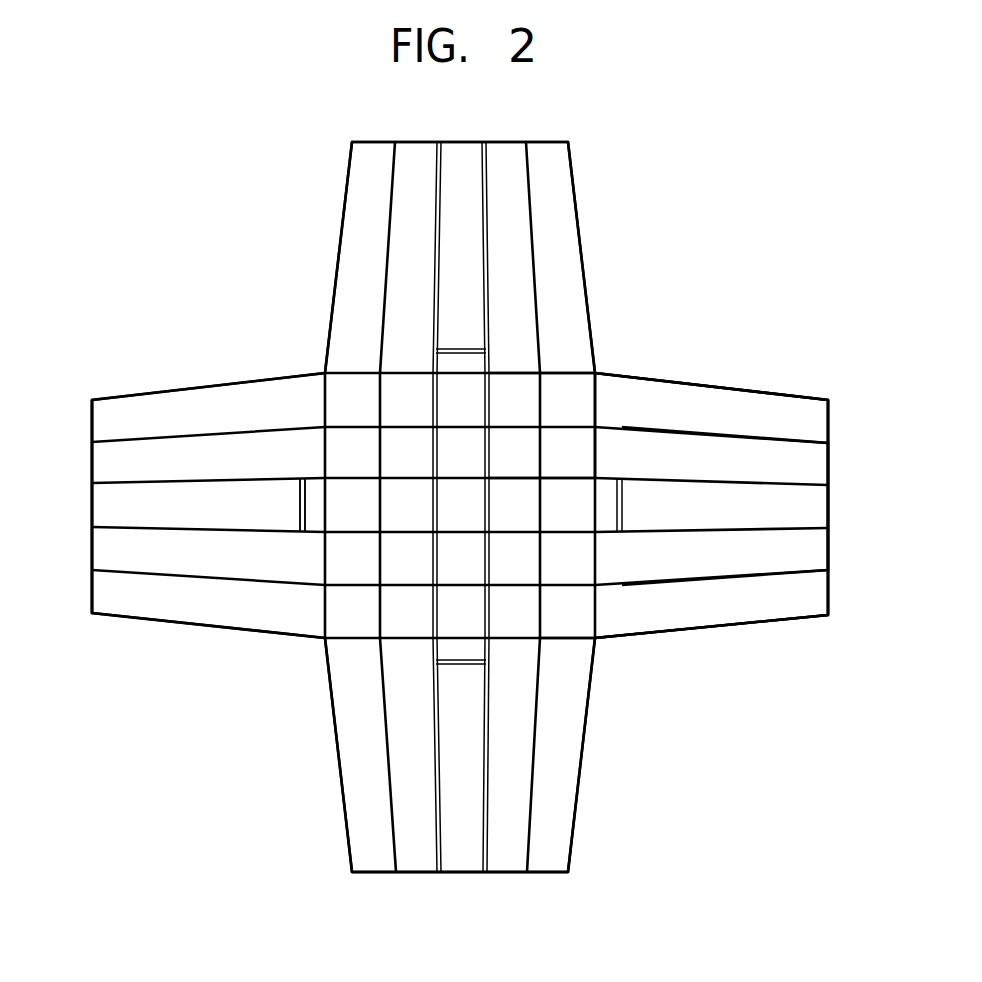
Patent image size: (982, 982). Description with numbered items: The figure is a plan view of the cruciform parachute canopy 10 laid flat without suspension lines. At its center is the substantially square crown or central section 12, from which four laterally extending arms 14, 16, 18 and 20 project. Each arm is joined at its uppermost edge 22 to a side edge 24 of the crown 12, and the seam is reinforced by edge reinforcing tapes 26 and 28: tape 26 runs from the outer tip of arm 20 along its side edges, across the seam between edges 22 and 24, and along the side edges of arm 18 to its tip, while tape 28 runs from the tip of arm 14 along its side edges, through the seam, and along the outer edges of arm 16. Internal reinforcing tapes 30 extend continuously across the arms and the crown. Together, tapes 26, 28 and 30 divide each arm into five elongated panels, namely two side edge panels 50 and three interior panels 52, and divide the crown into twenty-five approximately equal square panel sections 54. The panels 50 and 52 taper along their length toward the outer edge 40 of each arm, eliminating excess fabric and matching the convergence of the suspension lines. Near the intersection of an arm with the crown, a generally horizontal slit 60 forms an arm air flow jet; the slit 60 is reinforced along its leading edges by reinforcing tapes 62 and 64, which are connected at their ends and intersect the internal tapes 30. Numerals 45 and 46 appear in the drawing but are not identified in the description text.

The canopy 10 is at (60, 494).
The crown or central section 12 is at (392, 453).
The arm 14 is at (815, 507).
The arm 16 is at (107, 556).
The arm 18 is at (462, 150).
The arm 20 is at (457, 858).
The uppermost edge 22 is at (570, 642).
The side edge 24 is at (328, 622).
The edge reinforcing tape 26 is at (576, 196).
The edge reinforcing tape 28 is at (148, 393).
The internal reinforcing tape 30 is at (383, 493).
The outer edge 40 is at (93, 533).
The slot 45 is at (305, 478).
The side end 46 is at (91, 417).
The side edge panel 50 is at (780, 410).
The interior panel 52 is at (711, 470).
The panel section 54 is at (501, 410).
The opening or slit 60 is at (458, 348).
The reinforcing tape 62 is at (298, 490).
The reinforcing tape 64 is at (306, 504).